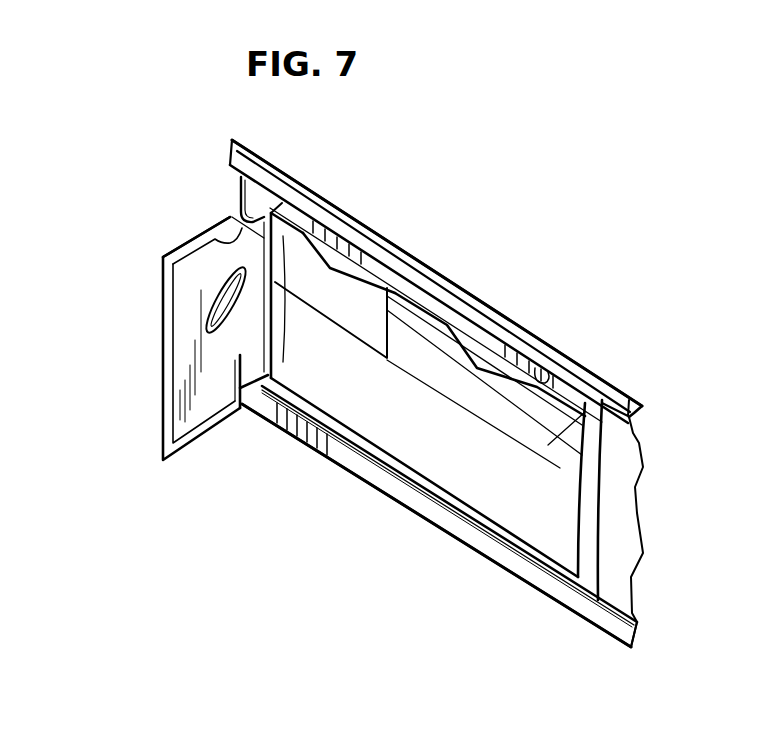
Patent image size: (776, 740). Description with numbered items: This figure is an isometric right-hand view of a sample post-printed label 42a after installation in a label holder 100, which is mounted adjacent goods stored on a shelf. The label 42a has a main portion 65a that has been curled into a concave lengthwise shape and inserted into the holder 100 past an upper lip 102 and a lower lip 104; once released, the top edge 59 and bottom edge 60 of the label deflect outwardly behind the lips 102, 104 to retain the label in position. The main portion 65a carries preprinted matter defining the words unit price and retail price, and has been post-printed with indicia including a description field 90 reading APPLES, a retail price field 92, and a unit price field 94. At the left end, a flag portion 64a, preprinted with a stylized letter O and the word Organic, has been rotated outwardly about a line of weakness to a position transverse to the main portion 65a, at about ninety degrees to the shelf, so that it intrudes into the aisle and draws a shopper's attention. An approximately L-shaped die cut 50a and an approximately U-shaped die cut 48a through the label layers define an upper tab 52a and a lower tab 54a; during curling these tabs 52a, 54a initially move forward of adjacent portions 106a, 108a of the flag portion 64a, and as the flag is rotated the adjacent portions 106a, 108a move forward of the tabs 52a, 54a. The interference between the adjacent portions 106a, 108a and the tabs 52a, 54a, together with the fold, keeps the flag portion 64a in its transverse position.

The label holder 100 is at (652, 400).
The retail price field 92 is at (606, 384).
The upper lip 102 is at (568, 371).
The upper tab 52a is at (266, 207).
The die cut 50a is at (251, 205).
The main portion 65a is at (567, 543).
The unit price field 94 is at (396, 295).
The top edge 59 is at (536, 371).
The bottom edge 60 is at (396, 450).
The description field 90 is at (479, 482).
The label 42a is at (603, 450).
The lower lip 104 is at (542, 576).
The lower tab 54a is at (268, 383).
The die cut 48a is at (247, 406).
The flag portion 64a is at (160, 410).
The adjacent portion 106a is at (218, 238).
The adjacent portion 108a is at (242, 382).